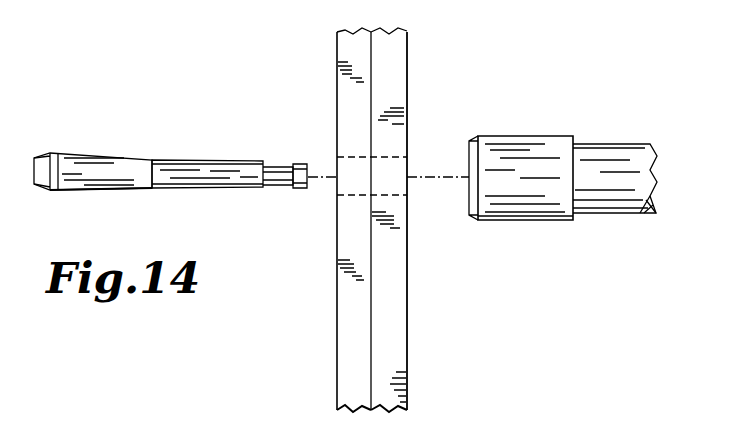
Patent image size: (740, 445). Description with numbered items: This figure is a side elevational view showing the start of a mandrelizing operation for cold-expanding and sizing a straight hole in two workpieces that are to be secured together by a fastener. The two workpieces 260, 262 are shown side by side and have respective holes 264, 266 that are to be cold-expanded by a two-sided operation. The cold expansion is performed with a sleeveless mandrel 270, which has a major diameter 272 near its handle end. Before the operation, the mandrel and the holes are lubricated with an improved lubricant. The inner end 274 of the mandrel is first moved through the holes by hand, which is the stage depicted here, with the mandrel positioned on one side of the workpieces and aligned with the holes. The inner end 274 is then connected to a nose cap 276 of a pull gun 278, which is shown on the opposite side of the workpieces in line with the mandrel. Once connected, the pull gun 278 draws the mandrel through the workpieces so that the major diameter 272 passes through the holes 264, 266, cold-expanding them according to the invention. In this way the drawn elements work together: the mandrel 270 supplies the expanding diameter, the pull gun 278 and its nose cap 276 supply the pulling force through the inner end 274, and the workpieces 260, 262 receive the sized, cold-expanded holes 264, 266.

The workpiece 260 is at (337, 315).
The workpiece 262 is at (388, 299).
The hole 264 is at (334, 198).
The hole 266 is at (406, 158).
The sleeveless mandrel 270 is at (172, 189).
The major diameter 272 is at (53, 152).
The inner end 274 is at (300, 163).
The nose cap 276 is at (517, 224).
The pull gun 278 is at (602, 216).